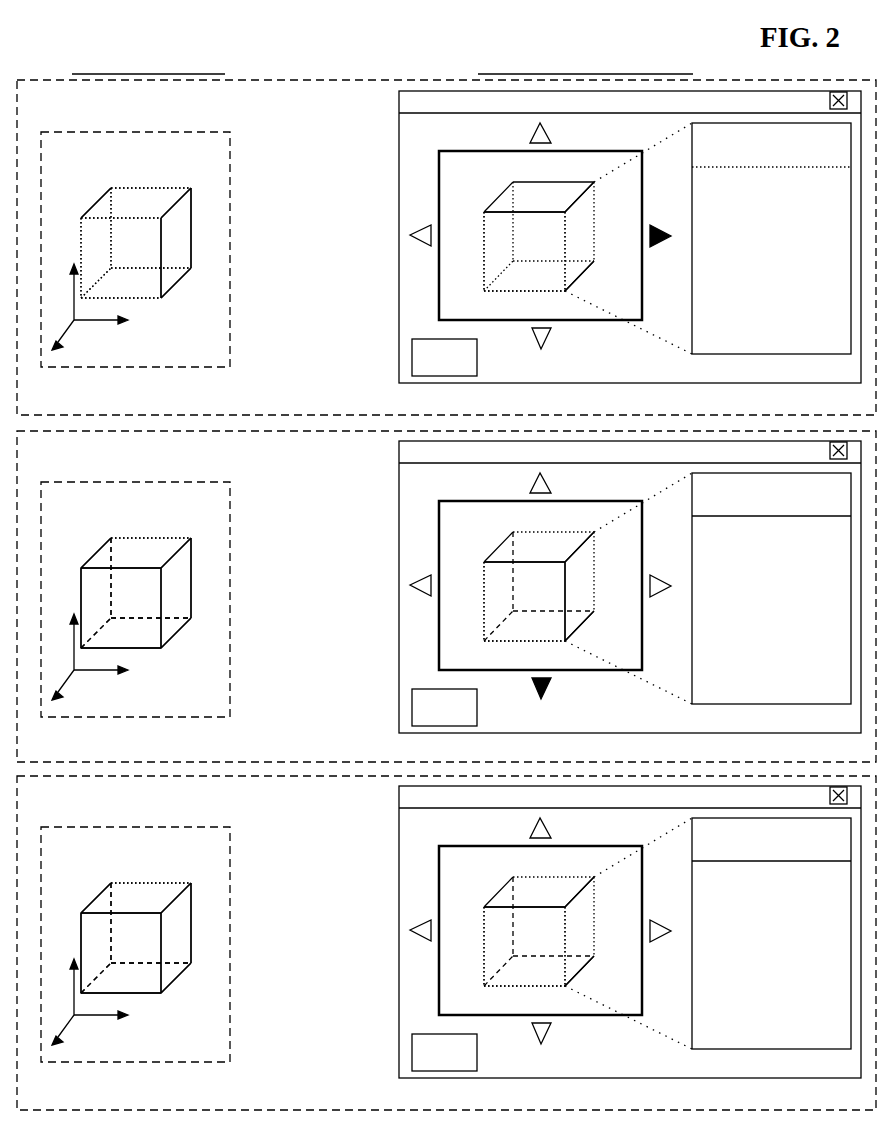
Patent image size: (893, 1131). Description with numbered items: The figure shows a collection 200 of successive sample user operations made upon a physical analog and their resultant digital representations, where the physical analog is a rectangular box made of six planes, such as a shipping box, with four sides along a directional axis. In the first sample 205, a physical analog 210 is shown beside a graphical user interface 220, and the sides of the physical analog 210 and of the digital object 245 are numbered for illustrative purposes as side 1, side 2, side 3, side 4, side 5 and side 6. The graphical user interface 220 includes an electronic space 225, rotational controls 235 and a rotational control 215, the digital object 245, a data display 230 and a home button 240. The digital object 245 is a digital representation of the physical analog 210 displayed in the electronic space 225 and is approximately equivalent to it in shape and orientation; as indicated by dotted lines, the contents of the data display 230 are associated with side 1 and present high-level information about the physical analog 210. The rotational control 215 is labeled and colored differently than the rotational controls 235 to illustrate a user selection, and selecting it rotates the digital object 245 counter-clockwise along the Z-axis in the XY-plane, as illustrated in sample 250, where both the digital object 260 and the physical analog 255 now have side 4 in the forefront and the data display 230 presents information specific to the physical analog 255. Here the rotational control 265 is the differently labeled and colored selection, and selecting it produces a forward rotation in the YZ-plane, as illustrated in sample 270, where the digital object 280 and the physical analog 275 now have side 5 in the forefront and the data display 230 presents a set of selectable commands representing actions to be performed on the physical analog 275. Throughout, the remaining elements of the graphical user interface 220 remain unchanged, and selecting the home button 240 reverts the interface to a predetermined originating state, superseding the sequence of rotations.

The collection 200 is at (38, 32).
The sample 205 is at (118, 224).
The physical analog 210 is at (181, 368).
The rotational control 215 is at (662, 247).
The graphical user interface 220 is at (630, 584).
The electronic space 225 is at (438, 298).
The data display 230 is at (772, 355).
The rotational controls 235 is at (533, 130).
The home button 240 is at (435, 375).
The digital object 245 is at (484, 261).
The sample 250 is at (121, 573).
The physical analog 255 is at (145, 615).
The digital object 260 is at (471, 586).
The rotational control 265 is at (535, 716).
The sample 270 is at (121, 918).
The physical analog 275 is at (145, 960).
The digital object 280 is at (471, 931).
The side 1 is at (337, 602).
The side 2 is at (337, 562).
The side 3 is at (152, 188).
The side 4 is at (153, 313).
The side 5 is at (337, 587).
The side 6 is at (133, 298).